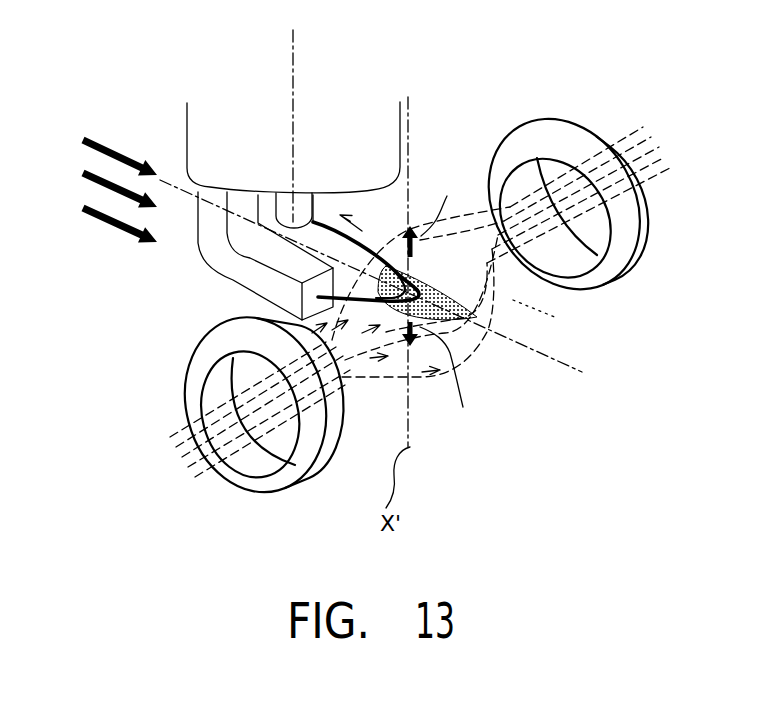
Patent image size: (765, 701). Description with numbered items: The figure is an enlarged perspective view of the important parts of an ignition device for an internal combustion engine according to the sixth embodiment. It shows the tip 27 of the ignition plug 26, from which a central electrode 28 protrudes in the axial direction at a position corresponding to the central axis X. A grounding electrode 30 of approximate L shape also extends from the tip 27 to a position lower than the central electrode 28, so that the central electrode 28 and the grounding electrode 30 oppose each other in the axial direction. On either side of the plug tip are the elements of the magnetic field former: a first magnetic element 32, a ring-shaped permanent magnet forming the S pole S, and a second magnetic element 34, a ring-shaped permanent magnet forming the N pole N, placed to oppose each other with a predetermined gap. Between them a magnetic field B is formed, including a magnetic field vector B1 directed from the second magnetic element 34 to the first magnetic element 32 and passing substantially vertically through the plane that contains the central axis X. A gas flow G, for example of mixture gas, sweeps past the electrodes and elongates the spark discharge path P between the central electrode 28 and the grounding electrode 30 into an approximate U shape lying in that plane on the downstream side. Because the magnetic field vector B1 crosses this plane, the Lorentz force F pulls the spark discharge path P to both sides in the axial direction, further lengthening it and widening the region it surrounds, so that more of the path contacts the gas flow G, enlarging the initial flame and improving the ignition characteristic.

The ignition plug 26 is at (186, 121).
The tip 27 is at (275, 151).
The central electrode 28 is at (314, 210).
The grounding electrode 30 is at (253, 287).
The first magnetic element 32 is at (567, 117).
The second magnetic element 34 is at (273, 487).
The gas flow G is at (317, 254).
The spark discharge path P is at (362, 265).
The Lorentz force F is at (391, 302).
The magnetic field B is at (488, 358).
The magnetic field vector B1 is at (556, 318).
The S pole S is at (627, 290).
The N pole N is at (321, 492).
The central axis X is at (293, 42).